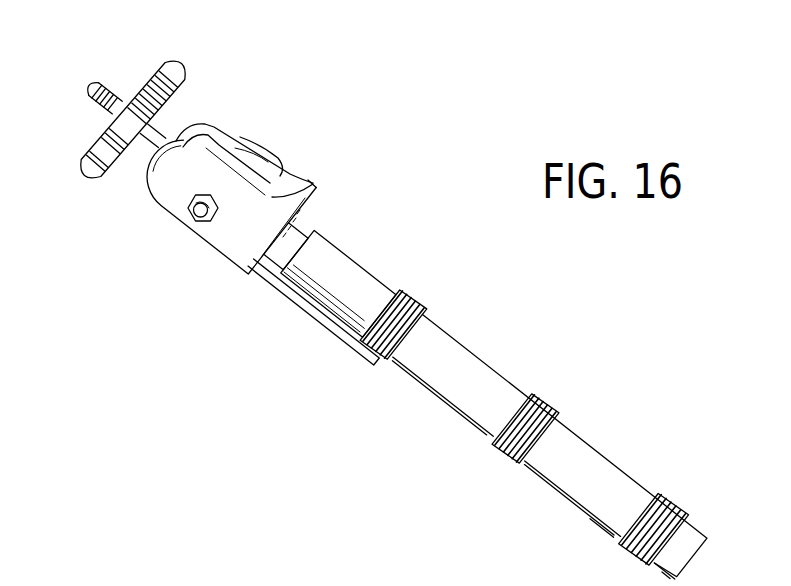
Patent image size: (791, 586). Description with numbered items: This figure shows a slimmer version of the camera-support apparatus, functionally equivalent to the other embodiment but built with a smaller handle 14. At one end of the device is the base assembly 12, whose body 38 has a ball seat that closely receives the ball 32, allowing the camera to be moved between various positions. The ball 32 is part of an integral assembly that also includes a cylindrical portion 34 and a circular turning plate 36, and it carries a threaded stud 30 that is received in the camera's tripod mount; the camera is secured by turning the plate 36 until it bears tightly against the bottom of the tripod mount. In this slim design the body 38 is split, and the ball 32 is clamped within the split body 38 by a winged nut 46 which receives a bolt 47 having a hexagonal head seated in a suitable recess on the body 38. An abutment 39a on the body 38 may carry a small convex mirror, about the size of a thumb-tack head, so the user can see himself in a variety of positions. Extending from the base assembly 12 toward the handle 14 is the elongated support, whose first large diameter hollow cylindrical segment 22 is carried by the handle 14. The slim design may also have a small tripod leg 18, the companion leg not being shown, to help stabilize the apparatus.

The base assembly 12 is at (221, 265).
The handgrip 14 is at (599, 444).
The tripod leg 18 is at (327, 329).
The first large diameter hollow cylindrical segment 22 is at (303, 231).
The threaded stud 30 is at (100, 88).
The ball 32 is at (187, 133).
The cylindrical portion 34 is at (135, 150).
The circular turning plate 36 is at (173, 62).
The body 38 is at (167, 210).
The abutment 39a is at (313, 183).
The winged nut 46 is at (283, 181).
The bolt 47 is at (200, 214).